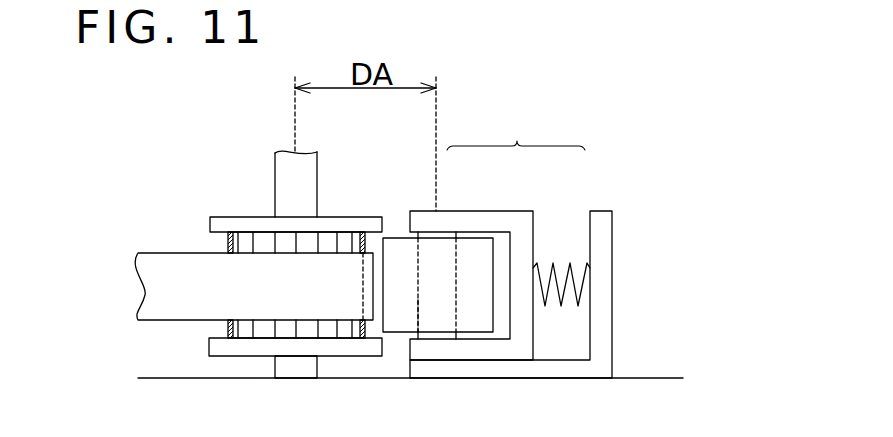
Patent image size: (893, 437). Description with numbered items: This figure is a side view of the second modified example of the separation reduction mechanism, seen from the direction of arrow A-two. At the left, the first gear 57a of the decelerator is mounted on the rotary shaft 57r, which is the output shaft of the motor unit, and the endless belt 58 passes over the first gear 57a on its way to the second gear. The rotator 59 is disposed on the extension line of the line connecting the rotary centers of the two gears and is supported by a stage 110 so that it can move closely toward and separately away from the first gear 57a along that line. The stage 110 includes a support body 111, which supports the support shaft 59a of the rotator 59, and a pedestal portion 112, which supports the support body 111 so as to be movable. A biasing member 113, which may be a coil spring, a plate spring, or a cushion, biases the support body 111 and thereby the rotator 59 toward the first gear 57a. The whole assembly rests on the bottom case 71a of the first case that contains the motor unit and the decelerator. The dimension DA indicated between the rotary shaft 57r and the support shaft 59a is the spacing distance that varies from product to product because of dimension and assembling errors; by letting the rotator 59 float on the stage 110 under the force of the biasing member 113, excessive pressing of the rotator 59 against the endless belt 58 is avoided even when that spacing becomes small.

The rotary shaft 57r is at (275, 163).
The first gear 57a is at (225, 218).
The endless belt 58 is at (158, 255).
The rotator 59 is at (398, 245).
The support shaft 59a is at (416, 318).
The stage 110 is at (516, 131).
The support body 111 is at (480, 211).
The pedestal portion 112 is at (592, 210).
The biasing member 113 is at (583, 300).
The bottom case 71a is at (665, 378).